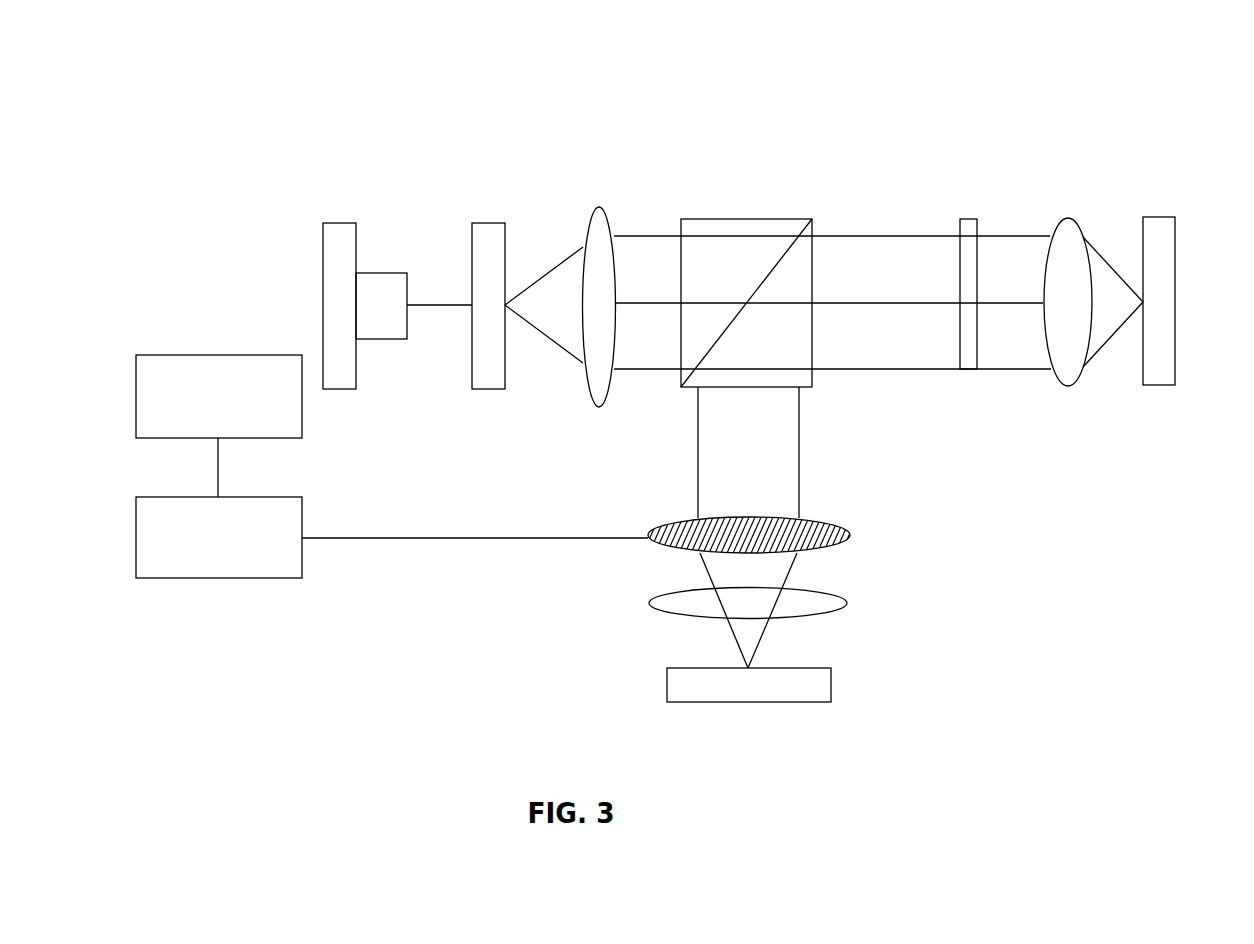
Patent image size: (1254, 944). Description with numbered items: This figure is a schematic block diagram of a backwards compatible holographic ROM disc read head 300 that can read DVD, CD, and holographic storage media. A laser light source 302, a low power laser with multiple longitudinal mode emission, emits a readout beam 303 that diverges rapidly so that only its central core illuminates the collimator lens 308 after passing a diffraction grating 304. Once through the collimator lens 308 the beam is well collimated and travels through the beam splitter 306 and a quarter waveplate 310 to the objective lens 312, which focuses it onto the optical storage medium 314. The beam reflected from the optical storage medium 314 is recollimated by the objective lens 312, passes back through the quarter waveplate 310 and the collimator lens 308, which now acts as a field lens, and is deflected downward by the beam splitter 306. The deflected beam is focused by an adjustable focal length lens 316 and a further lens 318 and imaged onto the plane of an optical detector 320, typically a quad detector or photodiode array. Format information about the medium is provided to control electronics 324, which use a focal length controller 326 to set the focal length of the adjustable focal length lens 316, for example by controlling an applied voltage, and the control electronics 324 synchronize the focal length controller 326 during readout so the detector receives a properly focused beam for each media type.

The read head 300 is at (482, 111).
The laser light source 302 is at (321, 271).
The readout beam 303 is at (433, 302).
The diffraction grating 304 is at (492, 222).
The beam splitter 306 is at (789, 217).
The collimator lens 308 is at (595, 207).
The quarter waveplate 310 is at (965, 217).
The objective lens 312 is at (1067, 217).
The optical storage medium 314 is at (1175, 253).
The adjustable focal length lens 316 is at (848, 534).
The lens 318 is at (848, 605).
The optical detector 320 is at (815, 667).
The control electronics 324 is at (210, 355).
The focal length controller 326 is at (212, 578).